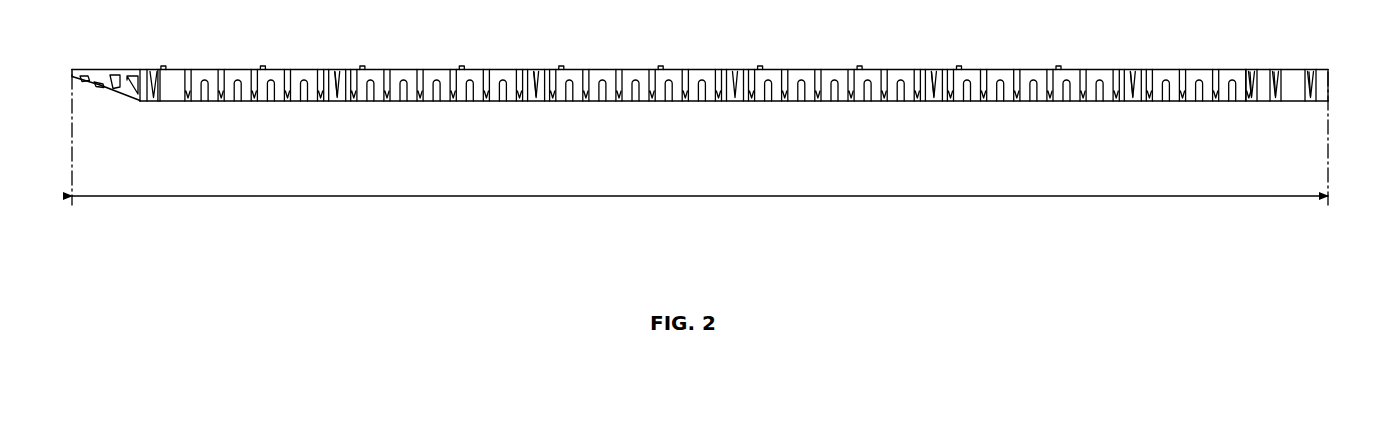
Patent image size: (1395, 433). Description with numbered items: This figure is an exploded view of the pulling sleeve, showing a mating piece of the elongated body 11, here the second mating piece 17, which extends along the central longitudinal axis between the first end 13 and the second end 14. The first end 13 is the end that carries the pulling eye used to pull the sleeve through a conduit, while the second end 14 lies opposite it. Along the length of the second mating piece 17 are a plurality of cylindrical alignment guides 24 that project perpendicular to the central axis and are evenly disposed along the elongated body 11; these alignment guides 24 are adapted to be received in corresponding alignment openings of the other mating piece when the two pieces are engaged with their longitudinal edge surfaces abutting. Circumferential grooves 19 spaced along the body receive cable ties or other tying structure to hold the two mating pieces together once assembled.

The elongated body 11 is at (870, 197).
The first end 13 is at (95, 57).
The second end 14 is at (1316, 66).
The second mating piece 17 is at (647, 54).
The circumferential grooves 19 is at (1332, 140).
The alignment guides 24 is at (1095, 34).